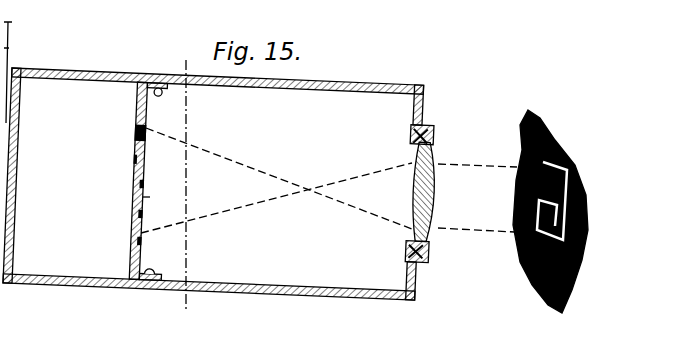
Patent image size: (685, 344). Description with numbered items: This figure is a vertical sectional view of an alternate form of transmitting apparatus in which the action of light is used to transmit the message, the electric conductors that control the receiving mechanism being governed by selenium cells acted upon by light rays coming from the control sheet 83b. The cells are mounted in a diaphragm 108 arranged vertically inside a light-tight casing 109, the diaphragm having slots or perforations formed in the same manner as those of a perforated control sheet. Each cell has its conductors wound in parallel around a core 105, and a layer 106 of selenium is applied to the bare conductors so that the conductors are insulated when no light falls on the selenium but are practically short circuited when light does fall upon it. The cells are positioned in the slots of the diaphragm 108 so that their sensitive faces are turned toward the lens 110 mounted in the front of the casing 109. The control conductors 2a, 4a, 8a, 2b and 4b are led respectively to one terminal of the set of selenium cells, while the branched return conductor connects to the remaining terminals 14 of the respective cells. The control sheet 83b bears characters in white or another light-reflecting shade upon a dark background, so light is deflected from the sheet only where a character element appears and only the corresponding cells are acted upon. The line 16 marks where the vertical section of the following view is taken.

The light-tight casing 109 is at (287, 287).
The partition wall 14 is at (135, 187).
The control conductor 4b is at (138, 130).
The control conductor 2b is at (138, 158).
The control conductor 8a is at (136, 184).
The control conductor 4a is at (136, 214).
The control conductor 2a is at (136, 241).
The core 105 is at (146, 130).
The diaphragm 108 is at (143, 197).
The layer of selenium 106 is at (141, 238).
The lens 110 is at (420, 200).
The control sheet 83b is at (588, 197).
The section line 16 is at (208, 63).